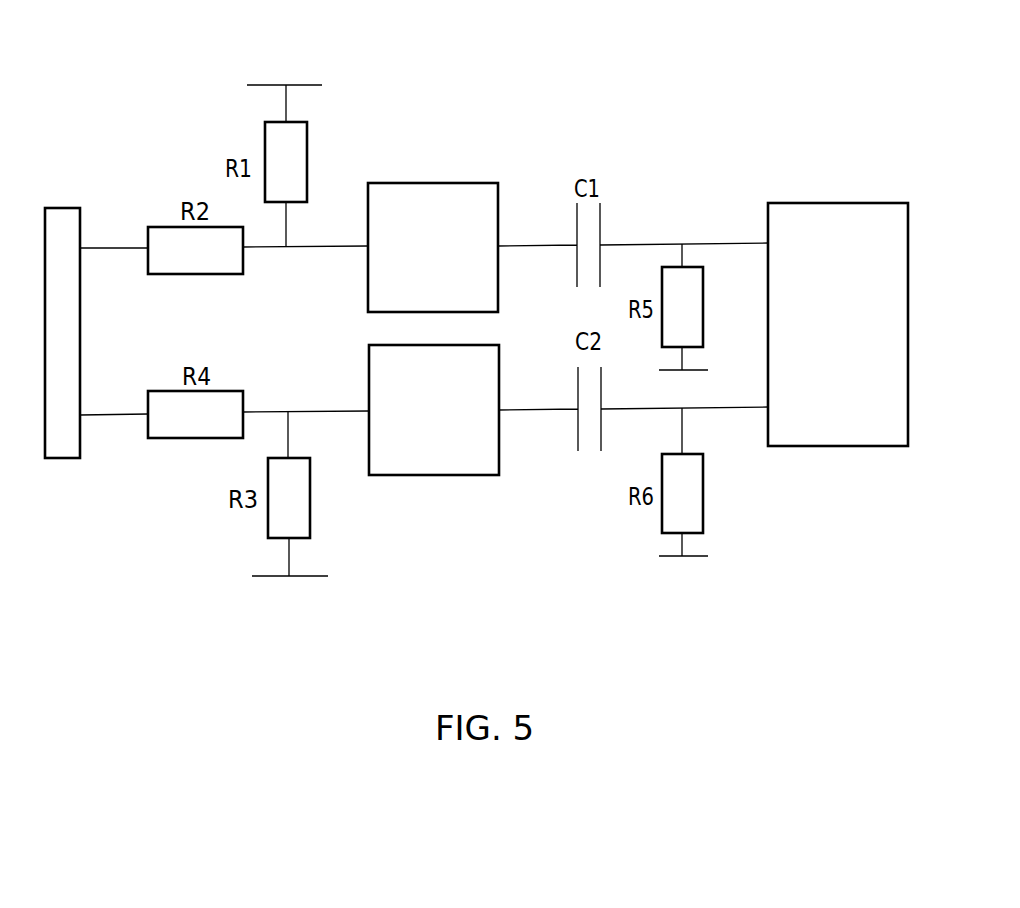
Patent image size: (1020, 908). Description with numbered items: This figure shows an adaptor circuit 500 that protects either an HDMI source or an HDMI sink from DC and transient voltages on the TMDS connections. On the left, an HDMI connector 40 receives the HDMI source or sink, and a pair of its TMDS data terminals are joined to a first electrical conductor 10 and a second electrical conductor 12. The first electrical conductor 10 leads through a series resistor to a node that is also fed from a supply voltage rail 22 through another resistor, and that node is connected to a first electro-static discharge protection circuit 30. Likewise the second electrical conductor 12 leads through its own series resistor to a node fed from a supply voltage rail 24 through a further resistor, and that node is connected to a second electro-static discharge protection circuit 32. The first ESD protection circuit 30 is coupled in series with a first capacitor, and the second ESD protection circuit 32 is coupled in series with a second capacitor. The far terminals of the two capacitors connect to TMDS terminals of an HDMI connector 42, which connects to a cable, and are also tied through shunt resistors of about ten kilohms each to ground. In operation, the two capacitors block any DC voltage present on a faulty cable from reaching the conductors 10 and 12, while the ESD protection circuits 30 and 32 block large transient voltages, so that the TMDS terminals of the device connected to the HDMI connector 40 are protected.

The first electrical conductor 10 is at (108, 248).
The second electrical conductor 12 is at (125, 416).
The supply voltage rail 22 is at (257, 74).
The supply voltage rail 24 is at (314, 581).
The first electro-static discharge (ESD) protection circuit 30 is at (443, 182).
The second electro-static discharge (ESD) protection circuit 32 is at (445, 477).
The HDMI connector 40 is at (58, 207).
The HDMI connector 42 is at (838, 203).
The adaptor circuit 500 is at (501, 634).